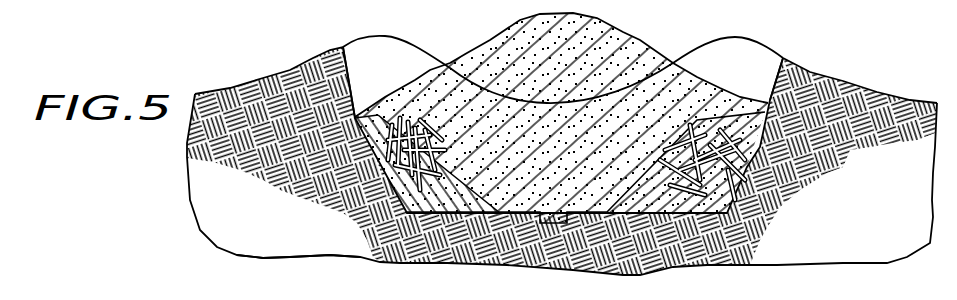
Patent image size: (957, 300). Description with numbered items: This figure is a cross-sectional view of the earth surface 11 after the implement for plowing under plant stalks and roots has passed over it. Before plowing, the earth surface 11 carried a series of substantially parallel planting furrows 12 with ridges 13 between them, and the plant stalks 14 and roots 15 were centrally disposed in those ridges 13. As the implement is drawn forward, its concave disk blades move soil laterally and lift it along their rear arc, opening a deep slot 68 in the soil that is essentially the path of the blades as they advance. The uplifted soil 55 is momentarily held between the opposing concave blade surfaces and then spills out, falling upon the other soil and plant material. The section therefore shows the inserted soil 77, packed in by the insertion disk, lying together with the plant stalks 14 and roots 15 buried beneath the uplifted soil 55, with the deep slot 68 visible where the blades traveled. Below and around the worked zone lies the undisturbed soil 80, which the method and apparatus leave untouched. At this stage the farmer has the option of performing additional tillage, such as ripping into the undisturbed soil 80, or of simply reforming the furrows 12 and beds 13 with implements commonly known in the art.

The earth surface 11 is at (842, 81).
The planting furrows 12 is at (204, 93).
The ridges 13 is at (393, 36).
The plant stalks 14 is at (555, 184).
The roots 15 is at (555, 184).
The uplifted soil 55 is at (593, 15).
The deep slot 68 is at (394, 74).
The inserted soil 77 is at (446, 214).
The undisturbed soil 80 is at (342, 222).